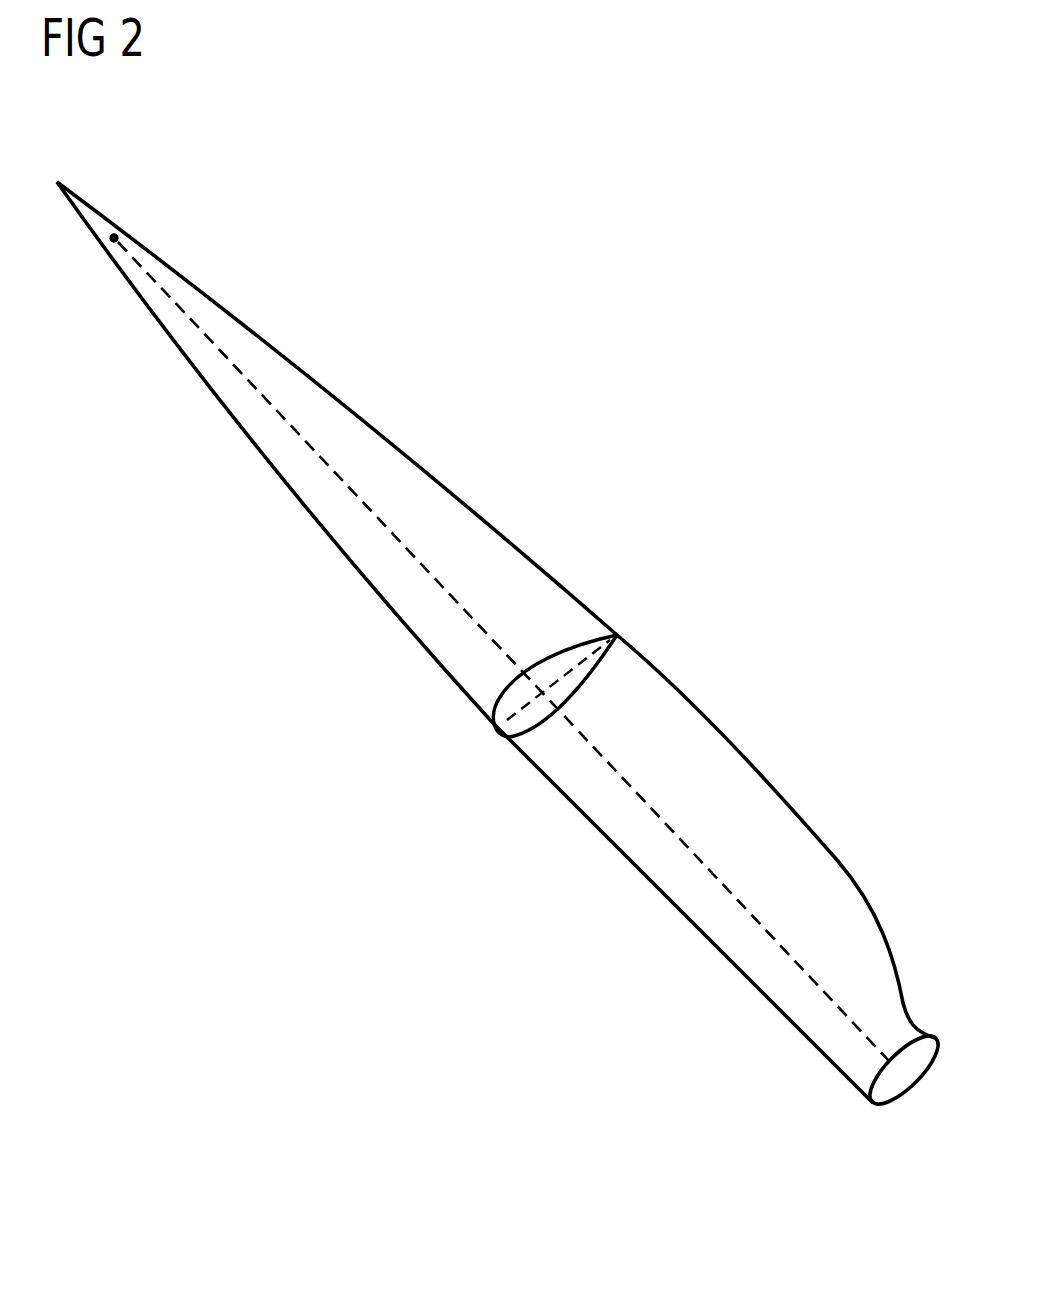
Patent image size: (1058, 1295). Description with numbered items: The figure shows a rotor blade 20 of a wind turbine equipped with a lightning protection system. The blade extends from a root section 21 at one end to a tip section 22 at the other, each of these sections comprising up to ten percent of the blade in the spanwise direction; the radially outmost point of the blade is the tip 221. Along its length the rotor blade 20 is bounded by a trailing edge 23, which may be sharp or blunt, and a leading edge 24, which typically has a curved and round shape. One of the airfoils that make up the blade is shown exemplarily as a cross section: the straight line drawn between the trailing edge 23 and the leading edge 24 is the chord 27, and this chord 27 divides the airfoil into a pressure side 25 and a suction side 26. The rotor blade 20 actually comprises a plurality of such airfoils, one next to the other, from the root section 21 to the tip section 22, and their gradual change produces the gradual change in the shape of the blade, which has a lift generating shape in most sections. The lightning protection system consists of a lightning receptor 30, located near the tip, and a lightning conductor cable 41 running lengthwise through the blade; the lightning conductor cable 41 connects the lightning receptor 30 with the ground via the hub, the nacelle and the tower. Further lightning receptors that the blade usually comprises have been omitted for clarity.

The rotor blade 20 is at (657, 536).
The root section 21 is at (903, 1027).
The tip section 22 is at (128, 238).
The tip 221 is at (57, 182).
The trailing edge 23 is at (771, 781).
The leading edge 24 is at (572, 812).
The pressure side 25 is at (581, 684).
The suction side 26 is at (546, 657).
The chord 27 is at (522, 708).
The lightning receptor 30 is at (117, 234).
The lightning conductor cable 41 is at (685, 845).